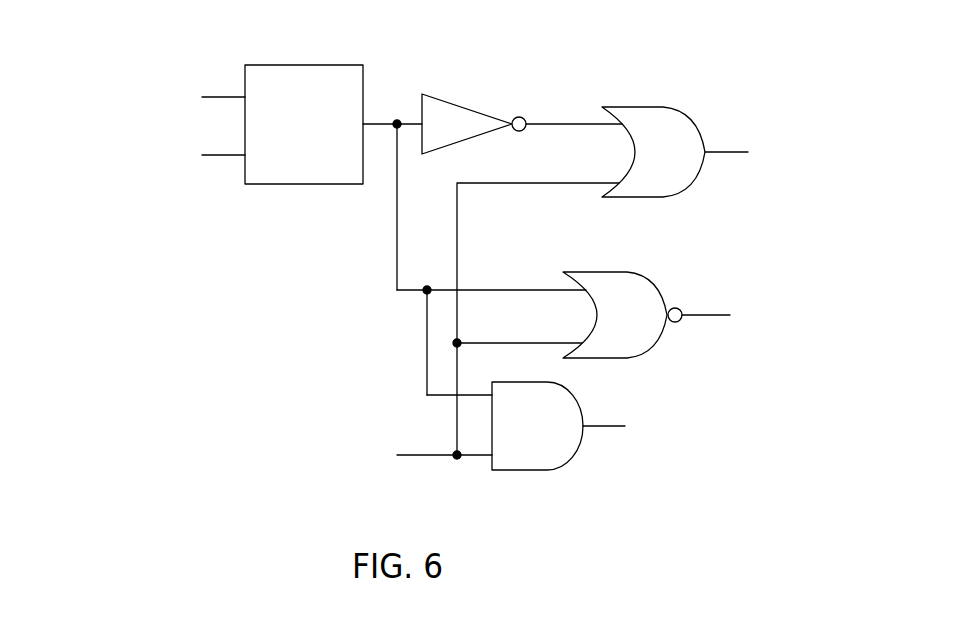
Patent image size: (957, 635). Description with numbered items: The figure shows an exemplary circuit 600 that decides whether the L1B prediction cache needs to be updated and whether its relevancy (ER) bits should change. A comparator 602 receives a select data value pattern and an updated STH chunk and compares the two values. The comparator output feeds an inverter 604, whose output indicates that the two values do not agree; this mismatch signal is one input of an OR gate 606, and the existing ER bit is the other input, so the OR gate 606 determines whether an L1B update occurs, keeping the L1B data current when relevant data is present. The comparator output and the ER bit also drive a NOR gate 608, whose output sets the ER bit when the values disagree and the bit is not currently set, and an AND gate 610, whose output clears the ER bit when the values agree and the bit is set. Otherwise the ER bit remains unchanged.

The circuit 600 is at (207, 300).
The comparator 602 is at (277, 64).
The inverter 604 is at (452, 102).
The OR gate 606 is at (633, 108).
The NOR gate 608 is at (630, 270).
The AND gate 610 is at (513, 472).